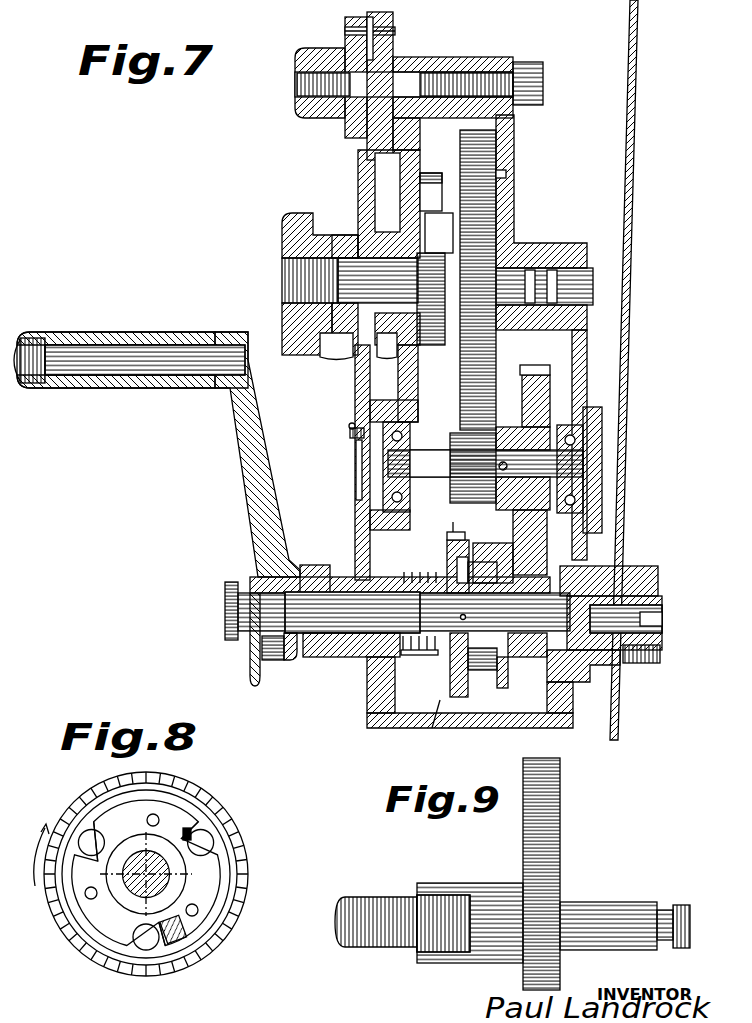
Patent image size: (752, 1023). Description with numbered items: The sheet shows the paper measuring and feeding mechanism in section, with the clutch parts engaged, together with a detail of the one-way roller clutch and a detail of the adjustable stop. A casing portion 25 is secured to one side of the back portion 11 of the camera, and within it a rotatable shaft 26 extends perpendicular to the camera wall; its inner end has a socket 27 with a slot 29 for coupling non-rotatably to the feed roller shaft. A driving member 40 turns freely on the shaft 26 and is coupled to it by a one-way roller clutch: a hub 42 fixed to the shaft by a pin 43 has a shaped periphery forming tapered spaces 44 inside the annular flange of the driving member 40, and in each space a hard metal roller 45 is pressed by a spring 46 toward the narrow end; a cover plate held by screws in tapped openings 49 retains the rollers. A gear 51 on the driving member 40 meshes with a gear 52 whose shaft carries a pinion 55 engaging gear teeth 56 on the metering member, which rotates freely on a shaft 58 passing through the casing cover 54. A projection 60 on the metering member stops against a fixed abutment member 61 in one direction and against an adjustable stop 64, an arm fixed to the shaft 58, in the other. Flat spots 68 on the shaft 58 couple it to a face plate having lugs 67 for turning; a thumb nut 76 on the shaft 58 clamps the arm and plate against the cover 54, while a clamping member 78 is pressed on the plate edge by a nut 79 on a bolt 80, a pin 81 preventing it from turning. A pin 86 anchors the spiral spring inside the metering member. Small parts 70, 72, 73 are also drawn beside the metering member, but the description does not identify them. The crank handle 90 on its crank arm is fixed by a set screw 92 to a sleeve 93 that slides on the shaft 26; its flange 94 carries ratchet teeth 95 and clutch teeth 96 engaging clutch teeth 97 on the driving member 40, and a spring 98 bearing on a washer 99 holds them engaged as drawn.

In FIG. 7, the back portion of the camera 11 is at (630, 82).
In FIG. 7, the casing portion 25 is at (585, 352).
In FIG. 7, the rotatable shaft 26 is at (343, 618).
In FIG. 8, the rotatable shaft 26 is at (122, 898).
In FIG. 7, the socket 27 is at (638, 582).
In FIG. 7, the slot 29 is at (664, 620).
In FIG. 7, the driving member 40 is at (510, 682).
In FIG. 8, the driving member 40 is at (214, 812).
In FIG. 7, the hub 42 is at (460, 660).
In FIG. 8, the hub 42 is at (200, 888).
In FIG. 7, the pin 43 is at (466, 617).
In FIG. 8, the pin 43 is at (228, 858).
In FIG. 8, the spaces 44 is at (118, 812).
In FIG. 7, the roller 45 is at (484, 672).
In FIG. 8, the roller 45 is at (90, 838).
In FIG. 8, the spring 46 is at (60, 840).
In FIG. 8, the tapped openings 49 is at (148, 822).
In FIG. 7, the gear 51 is at (552, 690).
In FIG. 7, the gear 52 is at (522, 382).
In FIG. 7, the casing cover 54 is at (416, 388).
In FIG. 7, the pinion 55 is at (460, 448).
In FIG. 7, the gear teeth 56 is at (500, 147).
In FIG. 7, the shaft 58 is at (350, 280).
In FIG. 9, the shaft 58 is at (497, 890).
In FIG. 7, the projection 60 is at (435, 279).
In FIG. 7, the fixed abutment member 61 is at (430, 173).
In FIG. 7, the adjustable stop 64 is at (461, 262).
In FIG. 9, the adjustable stop 64 is at (562, 792).
In FIG. 7, the lugs 67 is at (356, 165).
In FIG. 7, the flat spots 68 is at (336, 304).
In FIG. 9, the flat spots 68 is at (440, 900).
In FIG. 7, the pawl 70 is at (356, 470).
In FIG. 7, the spring 72 is at (350, 438).
In FIG. 7, the pivot pin 73 is at (348, 426).
In FIG. 7, the thumb nut 76 is at (283, 226).
In FIG. 7, the clamping member 78 is at (347, 42).
In FIG. 7, the nut 79 is at (296, 96).
In FIG. 7, the bolt 80 is at (398, 80).
In FIG. 7, the pin 81 is at (392, 30).
In FIG. 7, the pin 86 is at (506, 176).
In FIG. 7, the crank handle 90 is at (92, 389).
In FIG. 7, the set screw 92 is at (276, 662).
In FIG. 7, the sleeve 93 is at (318, 566).
In FIG. 7, the flange 94 is at (431, 724).
In FIG. 7, the ratchet teeth 95 is at (441, 520).
In FIG. 7, the clutch teeth 96 is at (463, 557).
In FIG. 7, the clutch teeth 97 is at (485, 562).
In FIG. 7, the spring 98 is at (414, 572).
In FIG. 7, the washer 99 is at (419, 659).